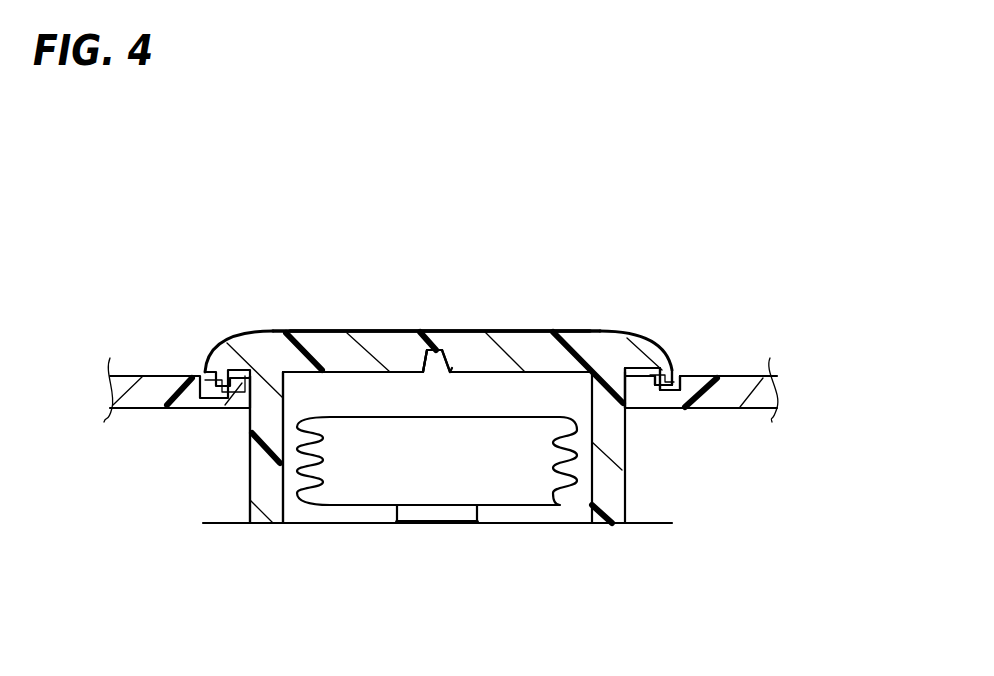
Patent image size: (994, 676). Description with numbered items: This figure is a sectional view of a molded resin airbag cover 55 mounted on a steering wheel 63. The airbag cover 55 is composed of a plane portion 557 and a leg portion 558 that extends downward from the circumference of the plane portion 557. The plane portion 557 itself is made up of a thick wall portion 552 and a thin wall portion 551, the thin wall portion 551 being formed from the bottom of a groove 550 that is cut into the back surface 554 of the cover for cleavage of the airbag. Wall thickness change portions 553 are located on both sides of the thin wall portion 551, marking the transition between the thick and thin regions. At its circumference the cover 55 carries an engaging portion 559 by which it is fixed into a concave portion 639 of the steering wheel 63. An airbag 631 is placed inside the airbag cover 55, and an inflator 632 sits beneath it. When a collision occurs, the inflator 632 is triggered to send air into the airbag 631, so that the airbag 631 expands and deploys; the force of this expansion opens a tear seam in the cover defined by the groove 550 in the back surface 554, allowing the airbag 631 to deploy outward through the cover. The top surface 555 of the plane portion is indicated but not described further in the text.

The airbag cover 55 is at (599, 330).
The thin wall portion 551 is at (446, 341).
The thick wall portion 552 is at (528, 350).
The wall thickness change portion 553 is at (404, 358).
The back surface 554 is at (442, 353).
The top plate 555 is at (340, 332).
The plane portion 557 is at (322, 355).
The leg portion 558 is at (270, 485).
The engaging portion 559 is at (688, 382).
The groove 550 is at (432, 354).
The steering wheel 63 is at (153, 393).
The airbag 631 is at (520, 482).
The inflator 632 is at (467, 513).
The concave portion 639 is at (660, 395).